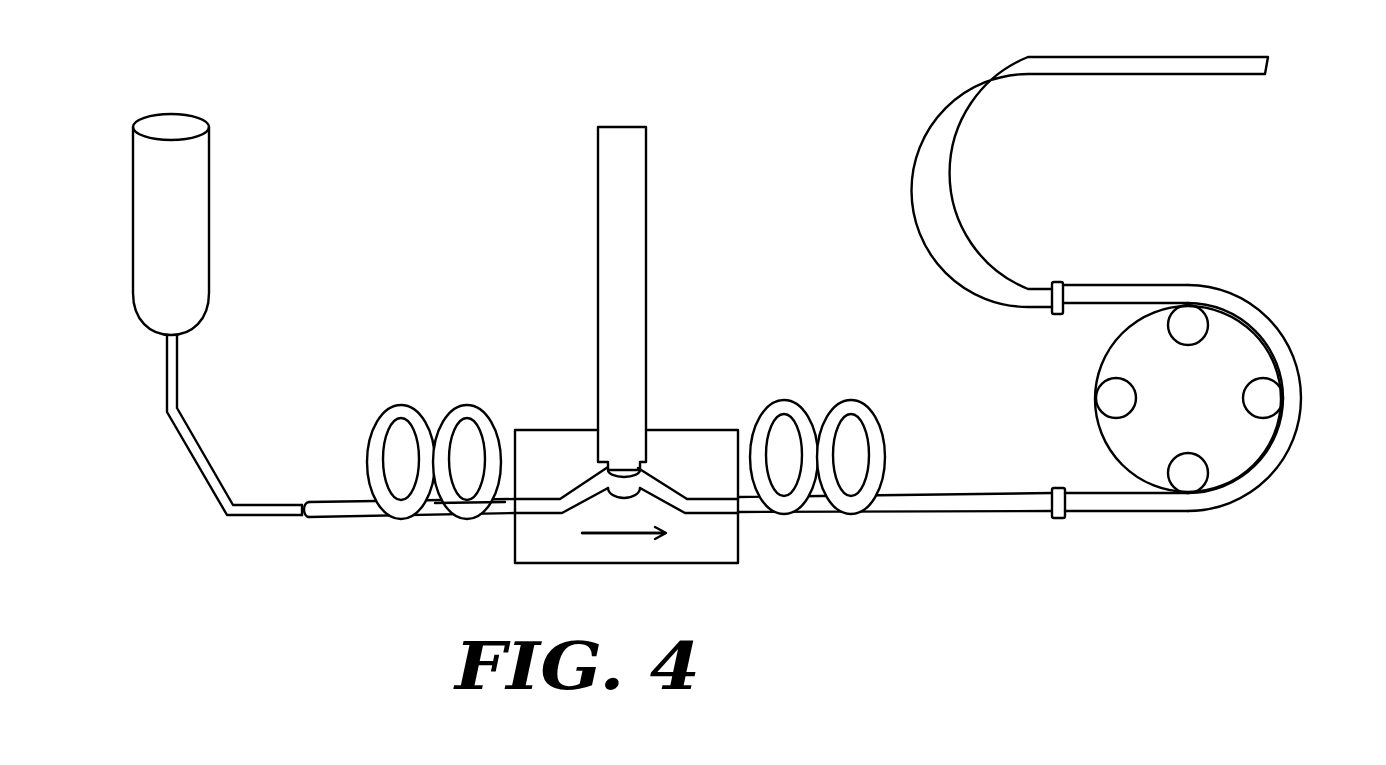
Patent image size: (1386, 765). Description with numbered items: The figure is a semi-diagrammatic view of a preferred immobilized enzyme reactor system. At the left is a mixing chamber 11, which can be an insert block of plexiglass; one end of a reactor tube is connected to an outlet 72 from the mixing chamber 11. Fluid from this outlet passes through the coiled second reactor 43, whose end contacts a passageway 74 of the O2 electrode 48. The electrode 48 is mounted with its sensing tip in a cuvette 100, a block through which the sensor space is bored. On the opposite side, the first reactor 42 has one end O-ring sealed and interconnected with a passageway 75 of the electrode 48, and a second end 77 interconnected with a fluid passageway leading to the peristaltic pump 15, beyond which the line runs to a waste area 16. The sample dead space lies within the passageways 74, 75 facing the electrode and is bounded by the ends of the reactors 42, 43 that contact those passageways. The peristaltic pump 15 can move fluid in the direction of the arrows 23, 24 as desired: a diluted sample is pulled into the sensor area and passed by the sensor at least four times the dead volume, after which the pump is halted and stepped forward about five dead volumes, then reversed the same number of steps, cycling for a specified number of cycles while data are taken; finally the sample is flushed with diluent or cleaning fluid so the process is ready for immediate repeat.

The mixing chamber 11 is at (198, 170).
The outlet 72 is at (262, 503).
The second reactor 43 is at (442, 392).
The O2 electrode 48 is at (637, 142).
The cuvette 100 is at (738, 538).
The passageway 74 is at (580, 487).
The passageway 75 is at (658, 482).
The arrow 23 is at (624, 521).
The arrow 24 is at (623, 547).
The first reactor 42 is at (832, 384).
The second end 77 is at (1040, 493).
The peristaltic pump 15 is at (1199, 409).
The waste area 16 is at (1272, 78).